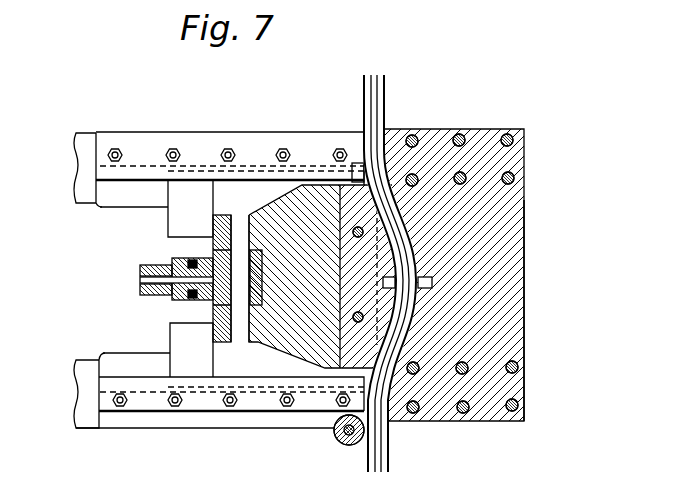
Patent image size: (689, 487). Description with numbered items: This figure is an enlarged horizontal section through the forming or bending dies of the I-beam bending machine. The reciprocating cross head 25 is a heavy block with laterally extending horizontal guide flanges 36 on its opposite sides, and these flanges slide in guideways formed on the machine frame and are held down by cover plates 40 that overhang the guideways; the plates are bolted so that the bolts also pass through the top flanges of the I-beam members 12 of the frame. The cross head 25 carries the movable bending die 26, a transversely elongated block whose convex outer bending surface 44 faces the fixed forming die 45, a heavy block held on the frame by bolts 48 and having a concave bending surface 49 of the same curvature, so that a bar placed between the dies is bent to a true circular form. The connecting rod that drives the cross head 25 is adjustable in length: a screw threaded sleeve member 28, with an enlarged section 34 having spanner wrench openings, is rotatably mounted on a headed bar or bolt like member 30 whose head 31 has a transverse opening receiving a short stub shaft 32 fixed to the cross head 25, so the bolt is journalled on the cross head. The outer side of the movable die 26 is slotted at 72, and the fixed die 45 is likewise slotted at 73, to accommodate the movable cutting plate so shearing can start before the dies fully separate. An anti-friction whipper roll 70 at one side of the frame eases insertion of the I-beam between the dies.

The I-beam member 12 is at (78, 190).
The cross head 25 is at (300, 200).
The movable bending die 26 is at (347, 192).
The screw threaded sleeve member 28 is at (163, 267).
The headed bar or bolt like member 30 is at (152, 280).
The head of bolt like member 31 is at (215, 297).
The stub shaft 32 is at (240, 223).
The enlarged section of sleeve 34 is at (188, 258).
The guide flange 36 is at (193, 187).
The cover plate 40 is at (145, 139).
The convex outer bending surface 44 is at (425, 135).
The fixed forming die 45 is at (521, 316).
The bolts 48 is at (506, 136).
The concave bending surface 49 is at (409, 333).
The anti-friction whipper roll 70 is at (347, 438).
The slot of movable bending die 72 is at (394, 281).
The slot of fixed bending die 73 is at (432, 282).